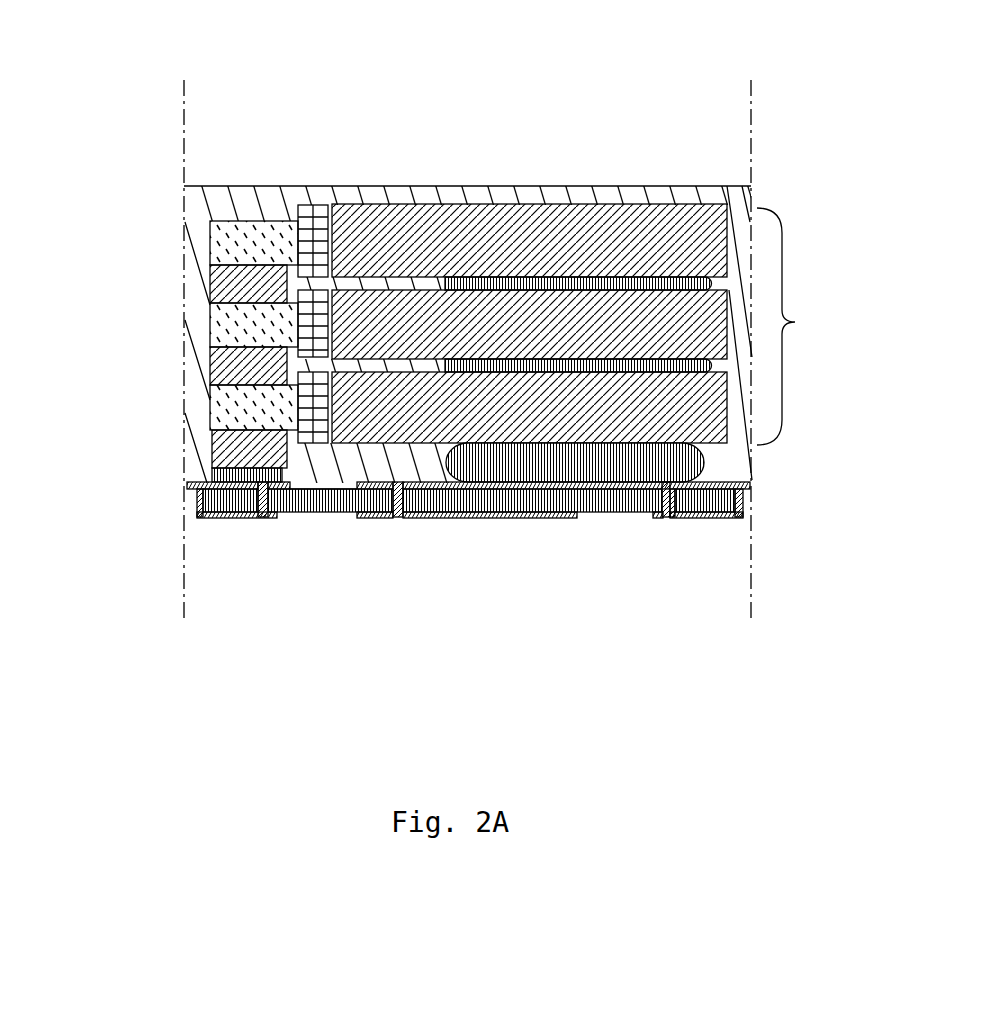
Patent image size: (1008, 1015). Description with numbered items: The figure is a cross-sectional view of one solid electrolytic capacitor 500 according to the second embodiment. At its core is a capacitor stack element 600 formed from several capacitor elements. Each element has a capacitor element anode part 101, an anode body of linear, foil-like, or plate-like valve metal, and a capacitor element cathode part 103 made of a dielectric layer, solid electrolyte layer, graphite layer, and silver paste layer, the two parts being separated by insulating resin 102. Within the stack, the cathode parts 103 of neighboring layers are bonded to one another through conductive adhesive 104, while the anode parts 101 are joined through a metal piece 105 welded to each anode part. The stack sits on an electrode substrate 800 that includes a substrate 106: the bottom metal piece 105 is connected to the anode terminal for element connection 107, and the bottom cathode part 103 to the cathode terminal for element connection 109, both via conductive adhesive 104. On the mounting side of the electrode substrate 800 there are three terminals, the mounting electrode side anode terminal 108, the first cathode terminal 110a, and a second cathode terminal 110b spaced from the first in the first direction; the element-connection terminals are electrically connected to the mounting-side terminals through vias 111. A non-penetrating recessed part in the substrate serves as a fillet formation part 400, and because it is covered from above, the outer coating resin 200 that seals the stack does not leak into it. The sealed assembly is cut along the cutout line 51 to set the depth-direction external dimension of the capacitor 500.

The cutout line 51 is at (463, 337).
The outer coating resin 200 is at (250, 203).
The capacitor element anode part 101 is at (260, 230).
The insulating resin 102 is at (303, 203).
The capacitor element cathode part 103 is at (410, 228).
The conductive adhesive 104 is at (567, 280).
The metal piece 105 is at (245, 292).
The substrate 106 is at (237, 517).
The anode terminal for element connection 107 is at (205, 480).
The mounting electrode side anode terminal 108 is at (203, 517).
The cathode terminal for element connection 109 is at (733, 483).
The first cathode terminal of the mounting electrode side 110a is at (702, 518).
The second cathode terminal of the mounting electrode side 110b is at (572, 518).
The via conductor 111 is at (265, 517).
The fillet formation part 400 is at (197, 518).
The solid electrolytic capacitor 500 is at (492, 172).
The capacitor stack element 600 is at (807, 326).
The electrode substrate 800 is at (178, 483).